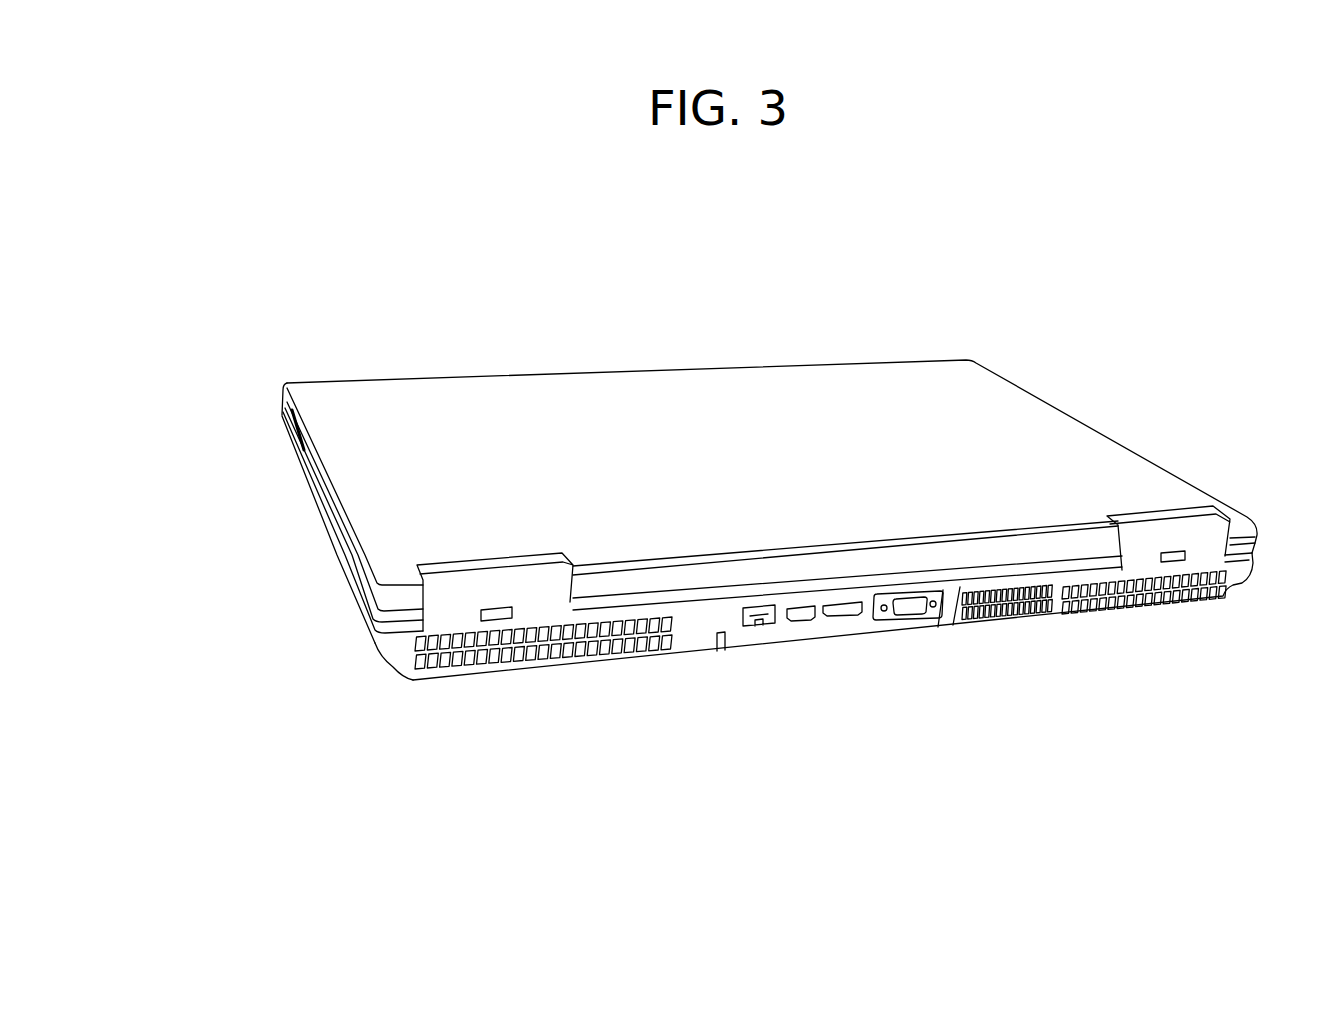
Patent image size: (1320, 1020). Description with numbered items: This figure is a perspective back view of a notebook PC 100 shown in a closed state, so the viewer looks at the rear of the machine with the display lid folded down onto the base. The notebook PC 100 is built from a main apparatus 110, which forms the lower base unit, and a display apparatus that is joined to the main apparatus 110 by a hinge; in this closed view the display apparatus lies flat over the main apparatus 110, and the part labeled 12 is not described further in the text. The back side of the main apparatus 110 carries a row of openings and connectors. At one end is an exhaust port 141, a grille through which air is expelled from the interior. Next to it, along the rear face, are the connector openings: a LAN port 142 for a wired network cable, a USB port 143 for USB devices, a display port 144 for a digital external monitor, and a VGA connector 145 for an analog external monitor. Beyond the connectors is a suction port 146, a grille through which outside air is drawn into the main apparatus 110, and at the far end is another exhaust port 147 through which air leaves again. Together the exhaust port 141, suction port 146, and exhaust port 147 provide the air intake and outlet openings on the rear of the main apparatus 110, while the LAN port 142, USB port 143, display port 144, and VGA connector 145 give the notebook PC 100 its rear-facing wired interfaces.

The notebook PC 100 is at (1106, 371).
The display unit (lid) 12 is at (283, 433).
The main apparatus 110 is at (388, 645).
The exhaust port 141 is at (598, 645).
The LAN port 142 is at (762, 622).
The USB port 143 is at (804, 621).
The display port 144 is at (846, 620).
The VGA connector 145 is at (912, 620).
The suction port 146 is at (1020, 614).
The another exhaust port 147 is at (1138, 596).